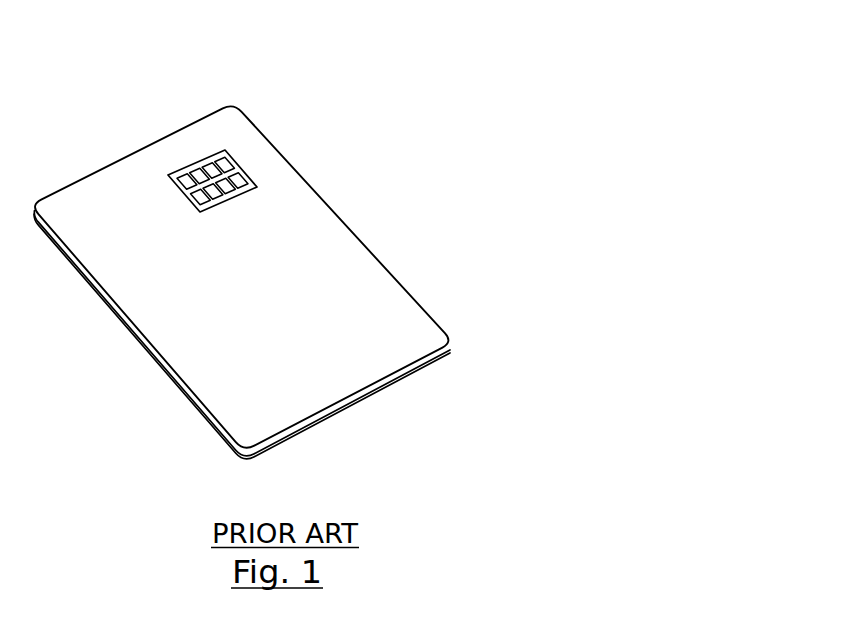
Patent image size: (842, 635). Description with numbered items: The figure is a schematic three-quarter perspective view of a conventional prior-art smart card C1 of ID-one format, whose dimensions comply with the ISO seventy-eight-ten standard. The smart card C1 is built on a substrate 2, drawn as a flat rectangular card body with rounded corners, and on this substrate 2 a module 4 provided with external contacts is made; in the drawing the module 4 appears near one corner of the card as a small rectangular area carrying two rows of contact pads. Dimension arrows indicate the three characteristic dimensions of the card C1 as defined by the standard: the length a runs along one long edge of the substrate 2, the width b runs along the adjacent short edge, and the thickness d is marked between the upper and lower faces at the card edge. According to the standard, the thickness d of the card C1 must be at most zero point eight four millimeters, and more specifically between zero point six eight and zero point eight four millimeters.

The smart card C1 is at (269, 250).
The substrate 2 is at (332, 262).
The chip module with contact pads 4 is at (205, 134).
The dimension a is at (36, 256).
The dimension b is at (276, 470).
The dimension d is at (485, 363).